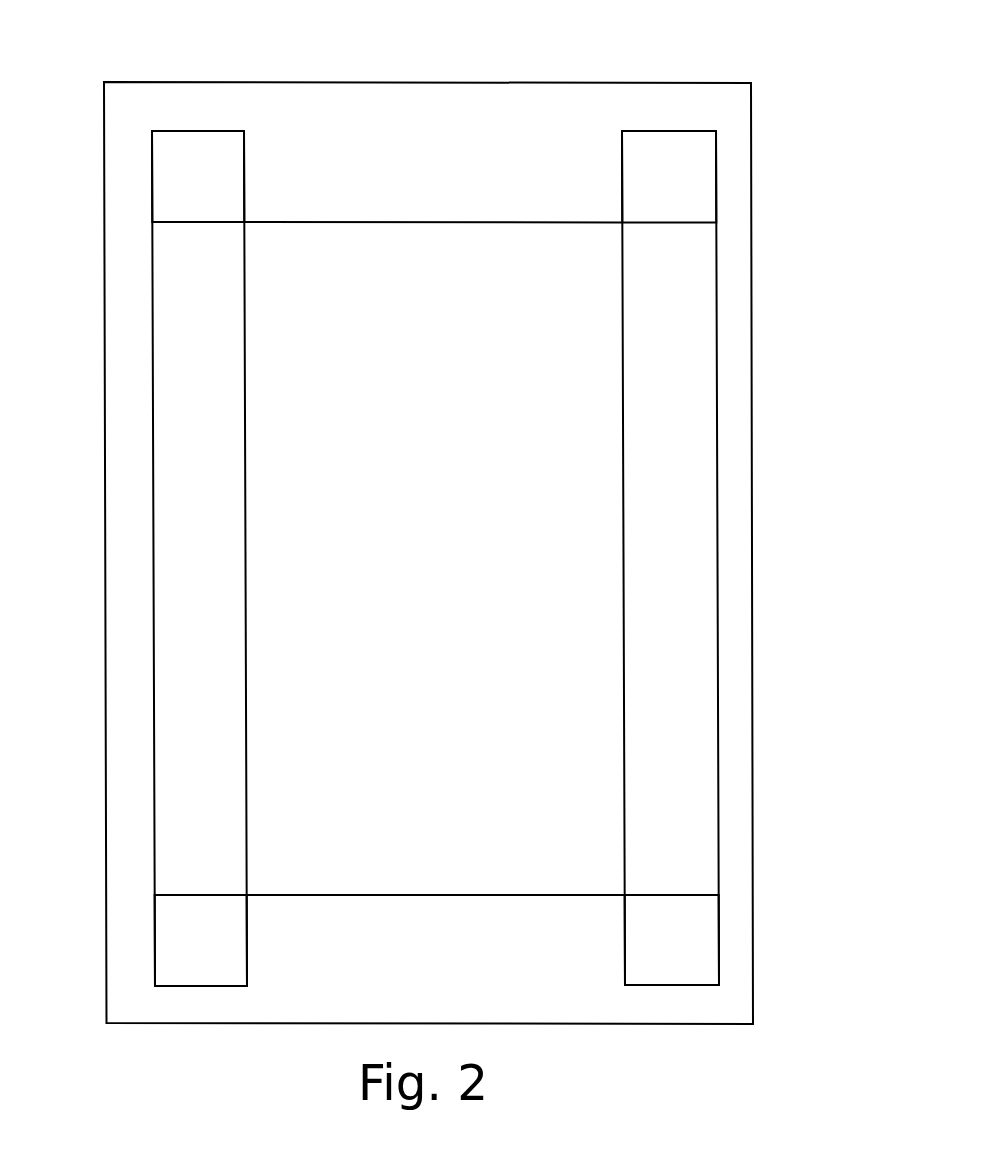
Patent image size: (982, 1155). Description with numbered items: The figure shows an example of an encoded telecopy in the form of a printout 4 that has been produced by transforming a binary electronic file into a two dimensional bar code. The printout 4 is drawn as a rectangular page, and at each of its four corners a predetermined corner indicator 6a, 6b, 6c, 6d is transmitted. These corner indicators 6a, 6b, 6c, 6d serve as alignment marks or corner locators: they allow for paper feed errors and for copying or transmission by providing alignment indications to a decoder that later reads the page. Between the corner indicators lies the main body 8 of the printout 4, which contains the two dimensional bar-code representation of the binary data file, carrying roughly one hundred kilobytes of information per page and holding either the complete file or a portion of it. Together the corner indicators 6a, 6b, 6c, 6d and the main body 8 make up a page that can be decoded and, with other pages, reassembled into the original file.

The printout 4 is at (122, 133).
The corner indicator 6a is at (165, 203).
The corner indicator 6b is at (697, 175).
The corner indicator 6c is at (175, 950).
The corner indicator 6d is at (700, 927).
The main body 8 is at (570, 525).